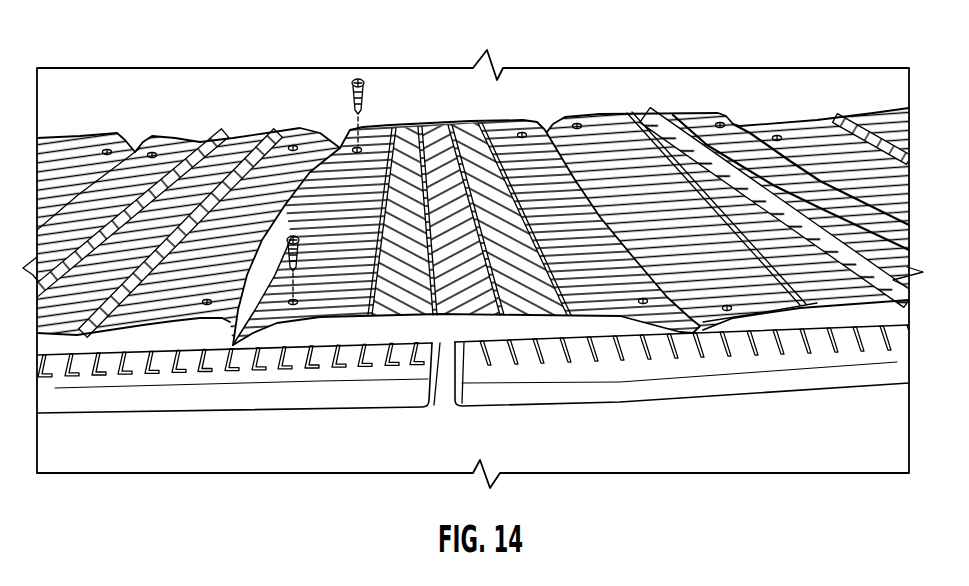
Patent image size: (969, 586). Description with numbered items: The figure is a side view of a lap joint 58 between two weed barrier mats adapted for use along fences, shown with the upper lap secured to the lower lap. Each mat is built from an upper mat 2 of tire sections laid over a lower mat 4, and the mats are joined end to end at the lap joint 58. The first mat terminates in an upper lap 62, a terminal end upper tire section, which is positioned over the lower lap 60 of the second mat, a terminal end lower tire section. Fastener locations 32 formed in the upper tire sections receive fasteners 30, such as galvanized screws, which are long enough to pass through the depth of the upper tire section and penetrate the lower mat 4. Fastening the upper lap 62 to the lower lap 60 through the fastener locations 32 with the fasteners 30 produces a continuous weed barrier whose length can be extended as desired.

The upper mat 2 is at (631, 140).
The lower mat 4 is at (650, 368).
The fastener 30 is at (356, 148).
The fastener location 32 is at (343, 146).
The lap joint 58 is at (428, 419).
The lower lap 60 is at (322, 363).
The upper lap 62 is at (442, 137).